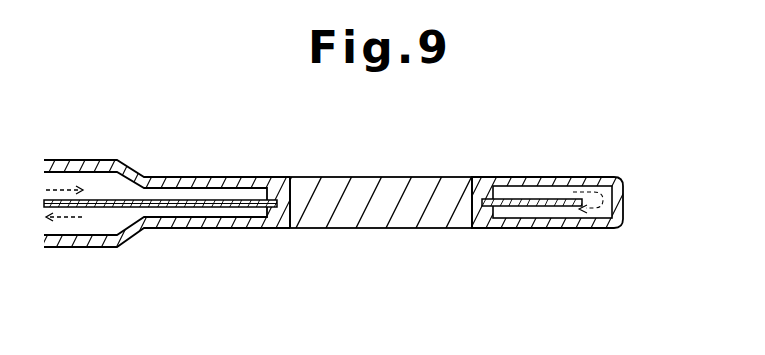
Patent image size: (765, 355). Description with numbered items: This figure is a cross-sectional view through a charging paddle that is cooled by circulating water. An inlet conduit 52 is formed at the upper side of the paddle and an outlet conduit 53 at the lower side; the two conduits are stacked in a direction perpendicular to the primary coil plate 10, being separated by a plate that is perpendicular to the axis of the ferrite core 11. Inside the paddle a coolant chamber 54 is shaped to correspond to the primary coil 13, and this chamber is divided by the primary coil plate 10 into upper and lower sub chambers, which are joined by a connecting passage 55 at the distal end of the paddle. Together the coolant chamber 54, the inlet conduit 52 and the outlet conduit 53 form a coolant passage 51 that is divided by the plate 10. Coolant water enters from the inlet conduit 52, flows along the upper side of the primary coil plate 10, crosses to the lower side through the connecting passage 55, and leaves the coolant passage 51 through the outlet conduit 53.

The primary coil plate 10 is at (560, 178).
The ferrite core 11 is at (372, 177).
The primary coil 13 is at (531, 207).
The coolant passage 51 is at (126, 185).
The inlet conduit 52 is at (80, 178).
The outlet conduit 53 is at (80, 228).
The coolant chamber 54 is at (533, 199).
The connecting passage 55 is at (623, 186).